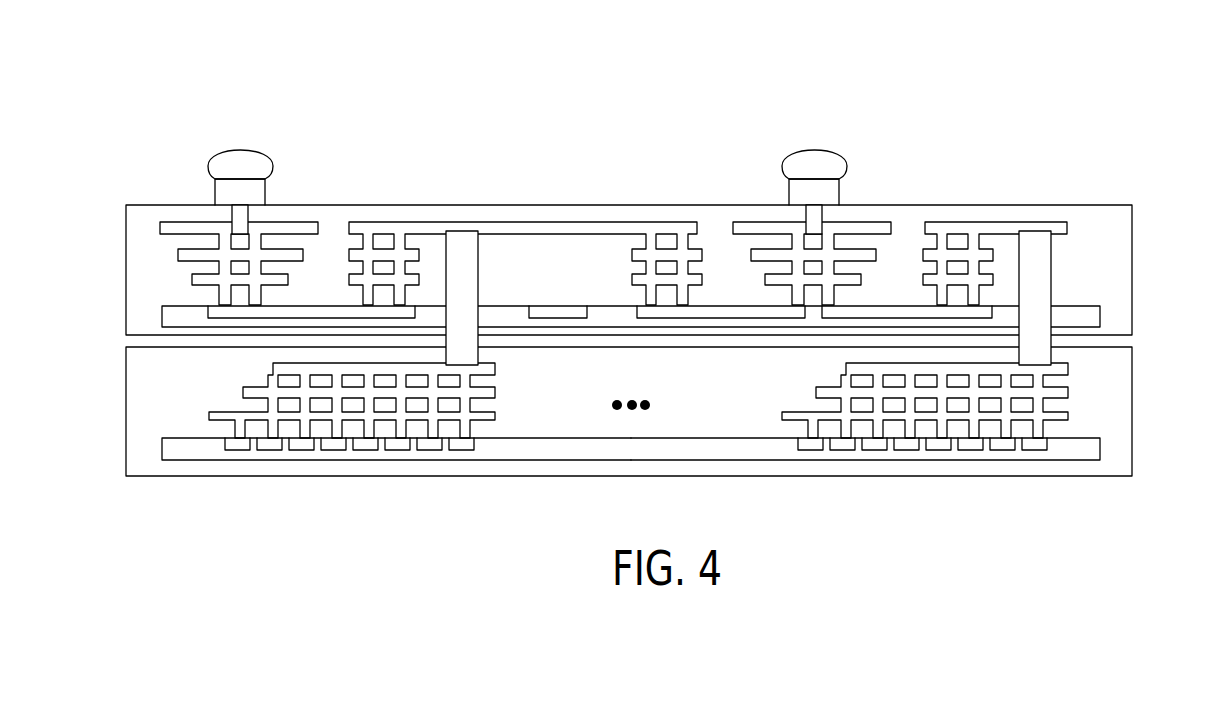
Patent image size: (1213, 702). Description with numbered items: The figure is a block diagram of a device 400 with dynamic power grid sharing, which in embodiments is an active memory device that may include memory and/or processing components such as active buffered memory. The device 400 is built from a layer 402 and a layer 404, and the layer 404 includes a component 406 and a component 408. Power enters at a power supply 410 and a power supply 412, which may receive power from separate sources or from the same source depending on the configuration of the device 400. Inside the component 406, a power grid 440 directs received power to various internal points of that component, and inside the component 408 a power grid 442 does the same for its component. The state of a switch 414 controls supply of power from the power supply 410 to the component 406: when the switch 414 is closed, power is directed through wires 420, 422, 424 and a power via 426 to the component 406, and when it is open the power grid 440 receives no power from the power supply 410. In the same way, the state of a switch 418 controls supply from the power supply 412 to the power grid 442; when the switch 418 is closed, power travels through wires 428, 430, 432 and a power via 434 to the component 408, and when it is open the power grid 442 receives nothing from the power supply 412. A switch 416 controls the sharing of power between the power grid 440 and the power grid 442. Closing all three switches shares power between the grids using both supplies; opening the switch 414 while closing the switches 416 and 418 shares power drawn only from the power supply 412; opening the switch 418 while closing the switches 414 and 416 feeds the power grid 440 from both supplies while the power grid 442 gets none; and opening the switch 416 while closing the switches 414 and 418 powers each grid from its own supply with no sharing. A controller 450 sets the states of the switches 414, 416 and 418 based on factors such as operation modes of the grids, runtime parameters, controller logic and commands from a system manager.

The device 400 is at (692, 77).
The layer 402 is at (1133, 270).
The layer 404 is at (1133, 408).
The component 406 is at (333, 462).
The component 408 is at (937, 462).
The power supply 410 is at (240, 150).
The power supply 412 is at (812, 150).
The switch 414 is at (312, 312).
The switch 416 is at (693, 318).
The switch 418 is at (890, 312).
The wire 420 is at (163, 237).
The wire 422 is at (413, 223).
The wire 424 is at (243, 391).
The power via 426 is at (480, 276).
The wire 428 is at (743, 223).
The wire 430 is at (988, 223).
The wire 432 is at (782, 415).
The power via 434 is at (1052, 278).
The power grid 440 is at (433, 437).
The power grid 442 is at (1002, 437).
The controller 450 is at (558, 318).